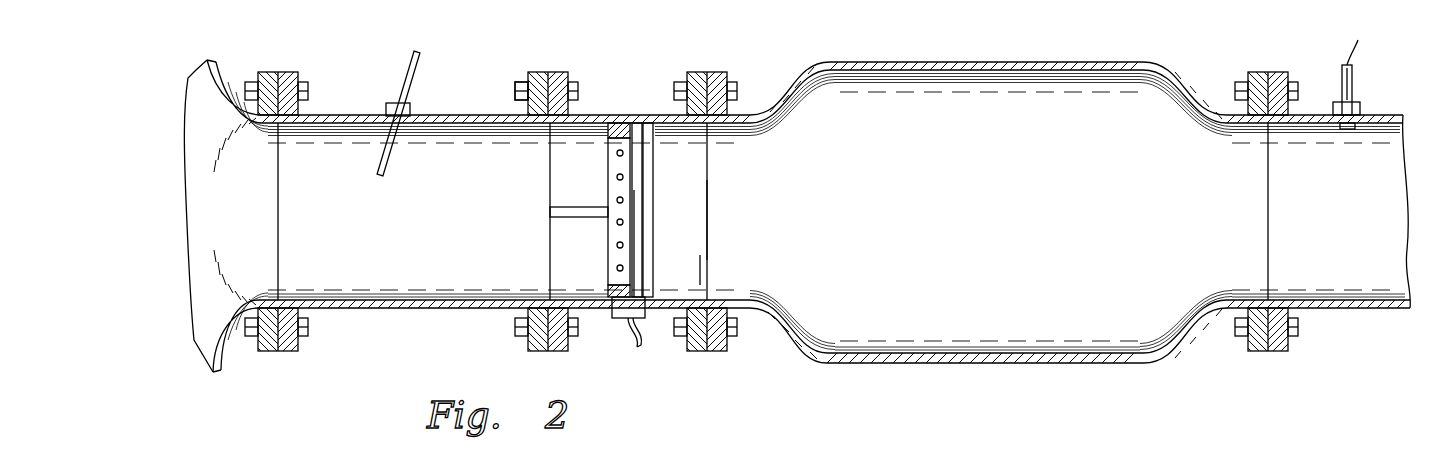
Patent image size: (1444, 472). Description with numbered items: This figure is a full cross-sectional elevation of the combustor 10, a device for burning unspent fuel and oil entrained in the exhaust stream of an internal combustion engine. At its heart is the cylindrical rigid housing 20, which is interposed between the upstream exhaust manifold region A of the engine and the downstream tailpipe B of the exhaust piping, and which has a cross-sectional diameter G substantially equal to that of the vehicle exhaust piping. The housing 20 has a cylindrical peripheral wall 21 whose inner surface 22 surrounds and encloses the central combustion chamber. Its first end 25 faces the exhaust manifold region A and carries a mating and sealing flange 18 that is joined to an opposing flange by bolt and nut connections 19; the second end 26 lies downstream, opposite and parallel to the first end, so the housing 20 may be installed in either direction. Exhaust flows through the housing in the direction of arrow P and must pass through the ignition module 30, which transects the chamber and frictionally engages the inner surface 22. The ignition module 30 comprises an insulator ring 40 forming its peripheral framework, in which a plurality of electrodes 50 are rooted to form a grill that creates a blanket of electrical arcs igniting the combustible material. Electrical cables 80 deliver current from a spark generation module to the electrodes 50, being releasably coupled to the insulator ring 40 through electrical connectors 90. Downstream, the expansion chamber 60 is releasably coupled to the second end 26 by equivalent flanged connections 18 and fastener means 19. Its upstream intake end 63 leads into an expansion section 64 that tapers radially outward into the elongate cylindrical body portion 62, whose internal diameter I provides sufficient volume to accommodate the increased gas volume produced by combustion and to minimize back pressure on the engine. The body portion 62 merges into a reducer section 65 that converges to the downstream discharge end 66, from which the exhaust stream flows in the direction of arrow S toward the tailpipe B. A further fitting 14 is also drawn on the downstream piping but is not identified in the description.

The combustor 10 is at (304, 44).
The pressure sensor 14 is at (1341, 78).
The mating and sealing flange 18 is at (552, 72).
The bolt and nut connections 19 is at (520, 88).
The housing 20 is at (610, 117).
The cylindrical peripheral wall 21 is at (628, 122).
The inner surface 22 is at (678, 130).
The first end 25 is at (548, 188).
The second end 26 is at (708, 225).
The ignition module 30 is at (608, 187).
The insulator ring 40 is at (608, 291).
The electrodes 50 is at (616, 245).
The expansion chamber 60 is at (1032, 55).
The body portion 62 is at (887, 63).
The upstream intake end 63 is at (700, 270).
The expansion section 64 is at (812, 85).
The reducer section 65 is at (1167, 84).
The downstream discharge end 66 is at (1267, 262).
The electrical cables 80 is at (630, 343).
The electrical connectors 90 is at (647, 318).
The arrow P is at (310, 217).
The arrow S is at (1290, 202).
The cross-sectional diameter G is at (480, 292).
The internal diameter I is at (955, 348).
The upstream exhaust manifold region A is at (160, 287).
The downstream tailpipe B is at (1438, 216).